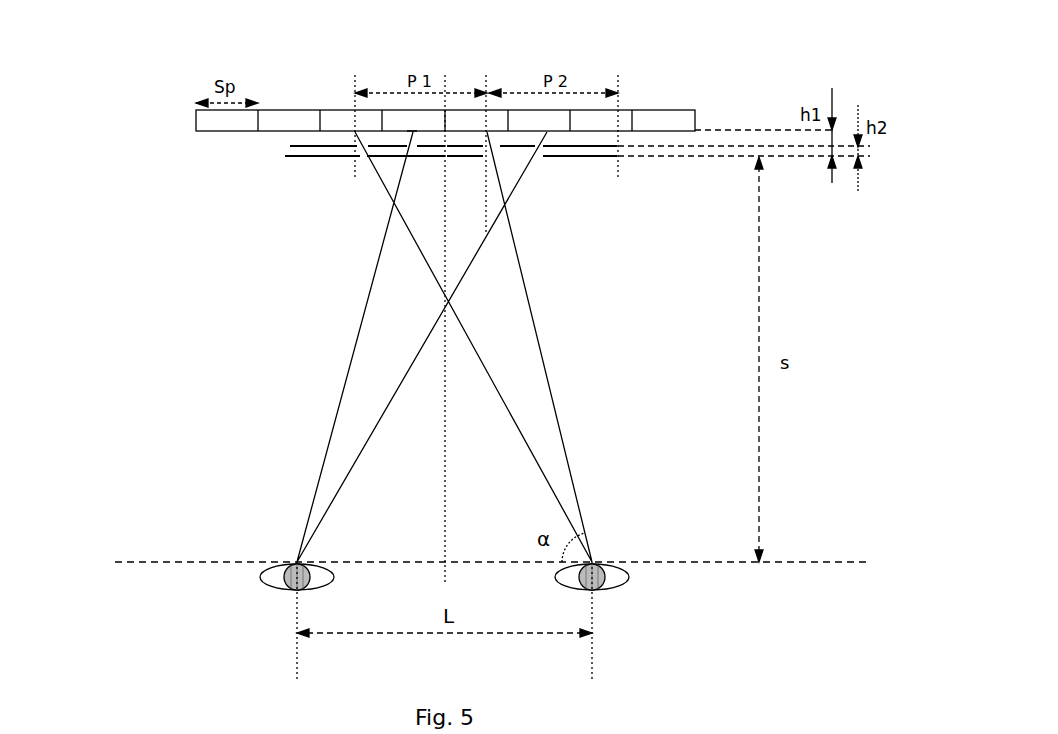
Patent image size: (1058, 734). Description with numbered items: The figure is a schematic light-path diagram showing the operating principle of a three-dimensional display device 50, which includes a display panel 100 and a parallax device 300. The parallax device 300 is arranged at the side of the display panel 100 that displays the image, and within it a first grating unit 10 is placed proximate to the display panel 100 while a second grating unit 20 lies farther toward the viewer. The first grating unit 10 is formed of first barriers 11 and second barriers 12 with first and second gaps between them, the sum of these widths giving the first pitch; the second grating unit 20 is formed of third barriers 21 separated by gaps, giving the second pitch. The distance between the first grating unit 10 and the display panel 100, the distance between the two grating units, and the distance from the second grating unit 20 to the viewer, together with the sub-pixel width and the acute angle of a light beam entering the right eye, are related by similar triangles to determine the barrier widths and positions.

The display panel 100 is at (184, 120).
The first grating unit 10 is at (251, 145).
The first barrier 11 is at (313, 146).
The second barrier 12 is at (413, 132).
The second grating unit 20 is at (257, 156).
The third barrier 21 is at (325, 157).
The 3D display device 50 is at (722, 84).
The parallax device 300 is at (601, 176).